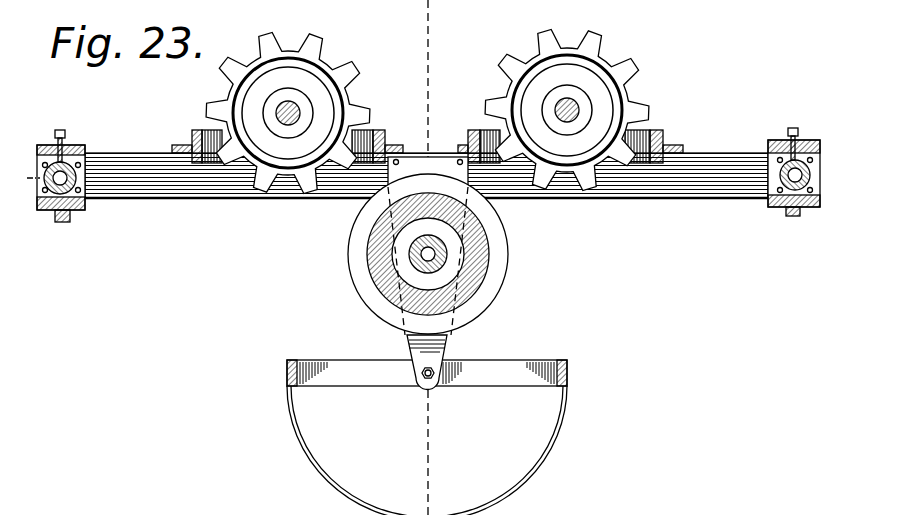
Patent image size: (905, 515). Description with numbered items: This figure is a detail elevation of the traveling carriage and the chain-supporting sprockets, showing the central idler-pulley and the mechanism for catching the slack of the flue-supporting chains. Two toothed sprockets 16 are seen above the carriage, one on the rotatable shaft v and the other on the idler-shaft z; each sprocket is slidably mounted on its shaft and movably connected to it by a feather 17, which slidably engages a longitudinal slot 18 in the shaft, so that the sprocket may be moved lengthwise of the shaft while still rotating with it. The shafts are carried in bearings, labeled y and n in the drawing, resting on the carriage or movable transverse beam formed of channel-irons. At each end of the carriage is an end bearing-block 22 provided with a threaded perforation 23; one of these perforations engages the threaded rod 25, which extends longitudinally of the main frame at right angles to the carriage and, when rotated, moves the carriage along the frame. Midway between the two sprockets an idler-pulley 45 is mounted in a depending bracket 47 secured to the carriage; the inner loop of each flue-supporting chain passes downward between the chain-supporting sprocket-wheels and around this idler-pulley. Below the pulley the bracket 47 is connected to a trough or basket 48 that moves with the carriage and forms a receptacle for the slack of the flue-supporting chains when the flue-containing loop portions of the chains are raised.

The toothed sprocket 16 is at (276, 44).
The feather 17 is at (290, 101).
The longitudinal slot 18 is at (300, 108).
The end bearing-block 22 is at (70, 150).
The threaded perforation 23 is at (65, 197).
The threaded rod 25 is at (104, 157).
The idler-pulley 45 is at (490, 252).
The depending bracket 47 is at (447, 347).
The trough or basket 48 is at (548, 437).
The bearing block y is at (373, 129).
The bearing block n is at (653, 129).
The rotatable shaft v is at (290, 124).
The idler-shaft z is at (567, 122).